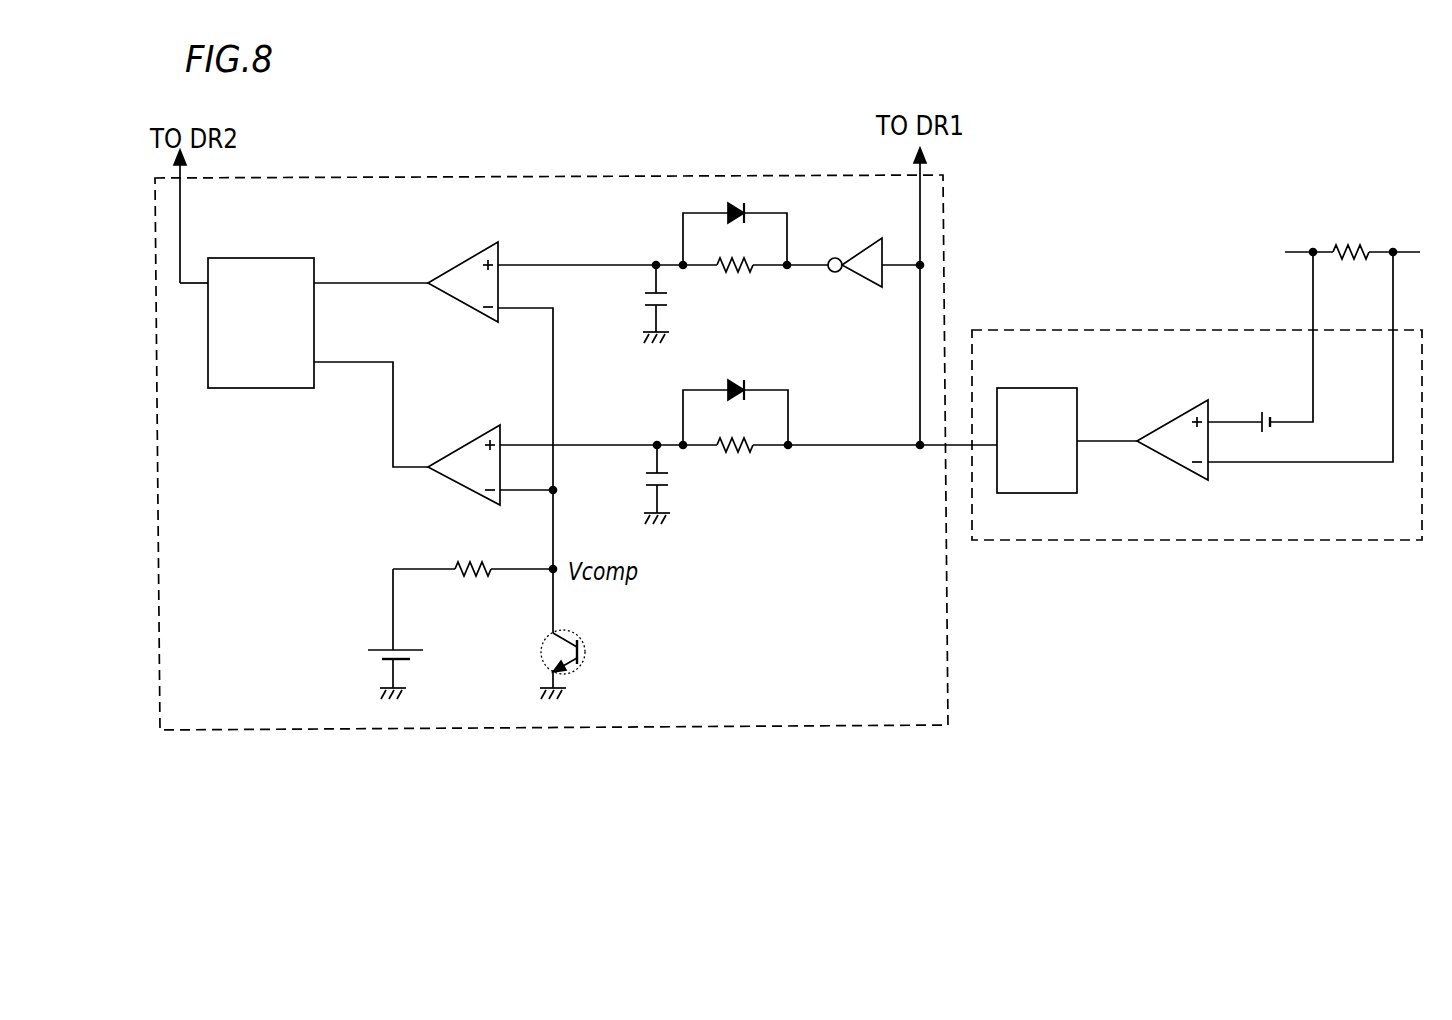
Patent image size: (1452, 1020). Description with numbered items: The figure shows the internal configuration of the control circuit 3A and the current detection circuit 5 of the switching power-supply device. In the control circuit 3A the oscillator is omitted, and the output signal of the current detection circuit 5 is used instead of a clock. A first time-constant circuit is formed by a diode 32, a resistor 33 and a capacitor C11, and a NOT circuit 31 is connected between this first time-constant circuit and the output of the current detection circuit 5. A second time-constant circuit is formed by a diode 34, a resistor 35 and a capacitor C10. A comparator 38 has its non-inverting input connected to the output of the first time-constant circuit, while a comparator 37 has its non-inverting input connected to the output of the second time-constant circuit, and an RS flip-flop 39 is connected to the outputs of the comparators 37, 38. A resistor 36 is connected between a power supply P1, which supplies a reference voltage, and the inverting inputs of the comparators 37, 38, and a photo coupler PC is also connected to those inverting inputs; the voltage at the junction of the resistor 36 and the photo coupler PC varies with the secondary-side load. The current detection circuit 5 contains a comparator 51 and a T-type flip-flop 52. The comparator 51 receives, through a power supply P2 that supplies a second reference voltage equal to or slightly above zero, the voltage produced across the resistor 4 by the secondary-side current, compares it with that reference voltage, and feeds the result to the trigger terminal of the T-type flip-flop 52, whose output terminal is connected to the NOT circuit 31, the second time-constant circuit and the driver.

The control circuit 3A is at (550, 175).
The resistor 4 is at (1348, 245).
The current detection circuit 5 is at (1028, 330).
The NOT circuit 31 is at (865, 250).
The diode 32 is at (735, 205).
The resistor 33 is at (733, 272).
The diode 34 is at (733, 383).
The resistor 35 is at (738, 448).
The resistor 36 is at (478, 562).
The comparator 37 is at (465, 447).
The comparator 38 is at (470, 257).
The RS flip-flop 39 is at (260, 390).
The comparator 51 is at (1163, 420).
The T-type flip-flop 52 is at (1078, 394).
The capacitor C10 is at (666, 490).
The capacitor C11 is at (665, 307).
The power supply P1 is at (383, 648).
The power supply P2 is at (1262, 412).
The photo coupler PC is at (546, 637).